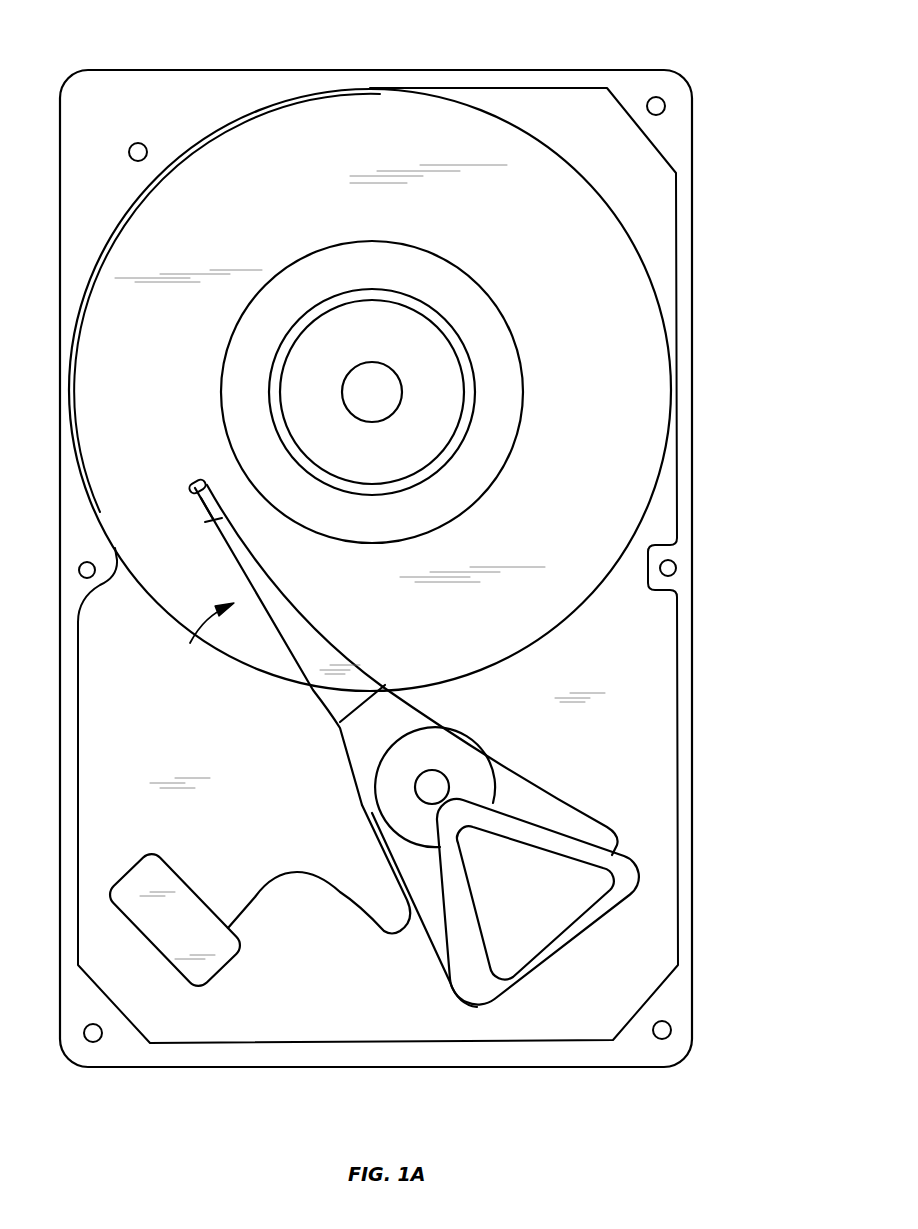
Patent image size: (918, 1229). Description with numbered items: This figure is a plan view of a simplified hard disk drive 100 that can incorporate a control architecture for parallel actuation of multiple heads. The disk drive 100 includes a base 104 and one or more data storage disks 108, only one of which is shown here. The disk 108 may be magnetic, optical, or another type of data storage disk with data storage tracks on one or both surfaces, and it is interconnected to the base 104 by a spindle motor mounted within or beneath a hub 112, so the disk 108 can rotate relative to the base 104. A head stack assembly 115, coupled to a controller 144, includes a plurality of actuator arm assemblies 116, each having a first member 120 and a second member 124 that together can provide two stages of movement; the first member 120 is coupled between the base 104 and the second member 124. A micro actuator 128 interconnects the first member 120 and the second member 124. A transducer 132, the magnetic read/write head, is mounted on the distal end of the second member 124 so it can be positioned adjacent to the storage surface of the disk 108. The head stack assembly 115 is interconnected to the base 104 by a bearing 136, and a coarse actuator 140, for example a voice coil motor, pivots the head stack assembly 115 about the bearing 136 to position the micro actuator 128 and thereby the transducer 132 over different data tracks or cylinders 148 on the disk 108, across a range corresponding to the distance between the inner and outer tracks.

The disk drive 100 is at (394, 48).
The base 104 is at (660, 661).
The data storage disk 108 is at (642, 358).
The hub 112 is at (357, 407).
The head stack assembly 115 is at (363, 655).
The actuator arm assembly 116 is at (197, 637).
The first member 120 is at (280, 638).
The second member 124 is at (197, 494).
The micro actuator 128 is at (213, 535).
The transducer 132 is at (193, 479).
The bearing 136 is at (422, 793).
The coarse actuator 140 is at (500, 1007).
The controller 144 is at (190, 885).
The data tracks or cylinders 148 is at (293, 118).